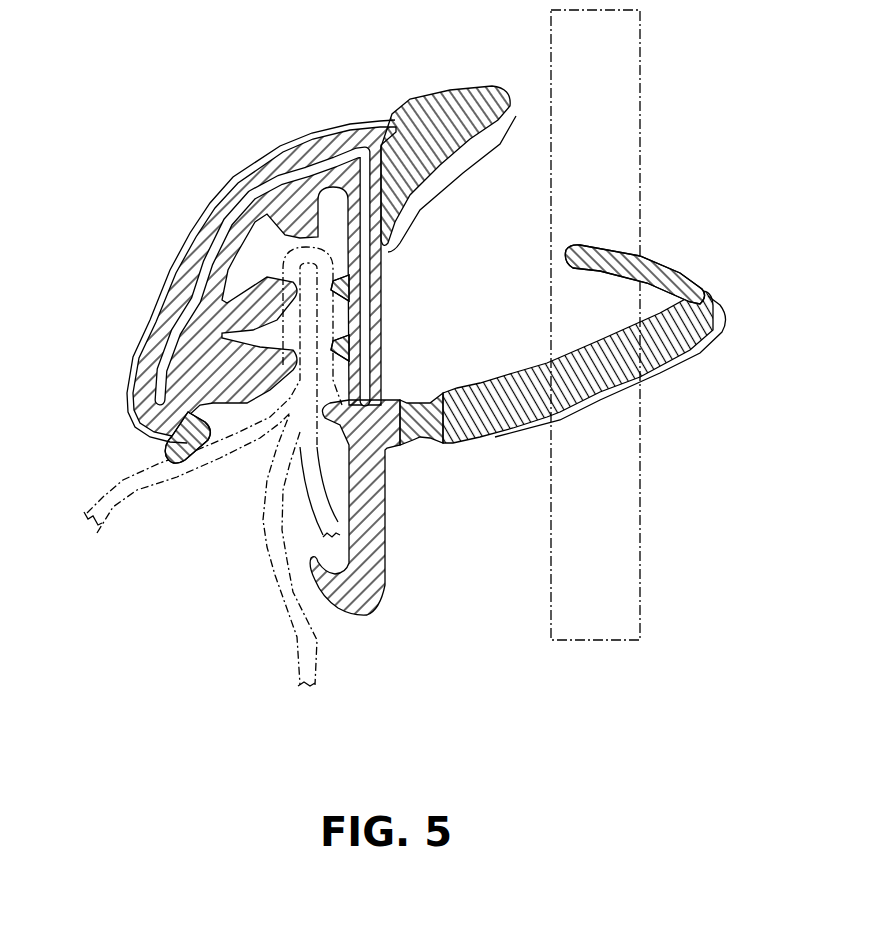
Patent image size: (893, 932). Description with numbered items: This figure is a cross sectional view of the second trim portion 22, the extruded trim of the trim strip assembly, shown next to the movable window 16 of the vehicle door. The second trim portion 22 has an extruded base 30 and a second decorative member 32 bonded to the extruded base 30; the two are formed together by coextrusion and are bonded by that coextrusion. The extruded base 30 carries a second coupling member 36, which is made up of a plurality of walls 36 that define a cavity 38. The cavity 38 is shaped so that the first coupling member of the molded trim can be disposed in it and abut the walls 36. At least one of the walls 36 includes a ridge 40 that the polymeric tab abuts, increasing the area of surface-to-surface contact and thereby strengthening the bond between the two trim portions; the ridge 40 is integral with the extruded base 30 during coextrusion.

The movable window 16 is at (598, 131).
The second trim portion 22 is at (226, 160).
The extruded base 30 is at (364, 622).
The second decorative member 32 is at (352, 128).
The second coupling member 36 is at (230, 257).
The cavity 38 is at (267, 233).
The ridge 40 is at (350, 342).